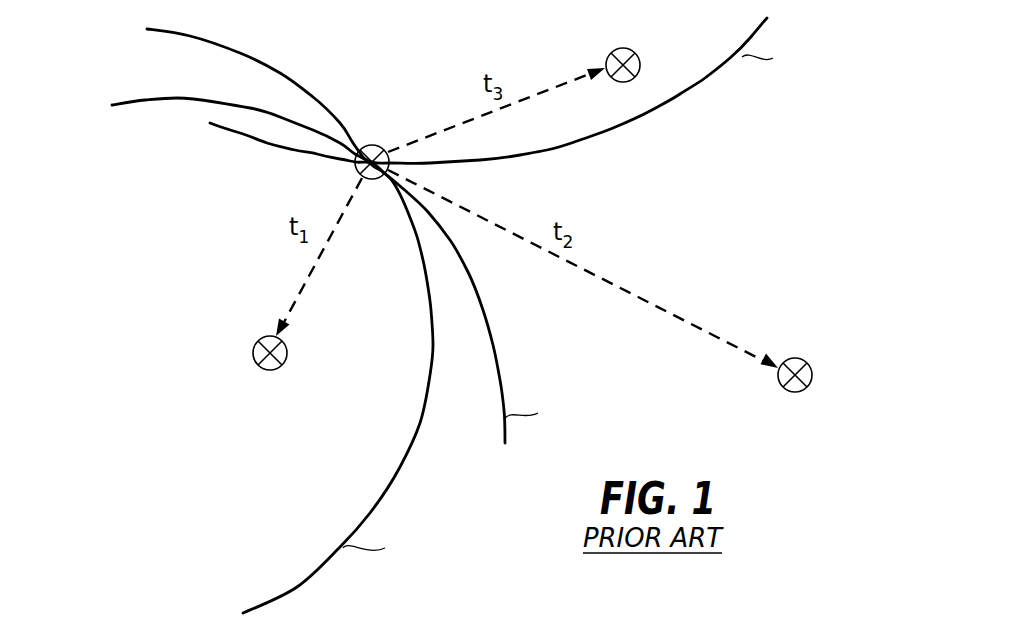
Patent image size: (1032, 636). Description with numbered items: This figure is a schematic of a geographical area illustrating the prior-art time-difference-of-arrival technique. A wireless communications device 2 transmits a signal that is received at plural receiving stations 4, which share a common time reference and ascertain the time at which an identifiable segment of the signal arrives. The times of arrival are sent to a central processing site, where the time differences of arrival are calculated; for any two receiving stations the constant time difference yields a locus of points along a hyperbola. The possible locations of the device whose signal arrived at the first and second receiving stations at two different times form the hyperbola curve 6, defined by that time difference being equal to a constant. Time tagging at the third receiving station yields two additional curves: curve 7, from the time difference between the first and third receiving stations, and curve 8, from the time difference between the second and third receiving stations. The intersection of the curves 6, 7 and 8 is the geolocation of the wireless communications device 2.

The wireless communications device 2 is at (373, 146).
The receiving stations 4 is at (266, 370).
The hyperbola curve 6 is at (292, 590).
The curve 7 is at (491, 318).
The curve 8 is at (693, 93).